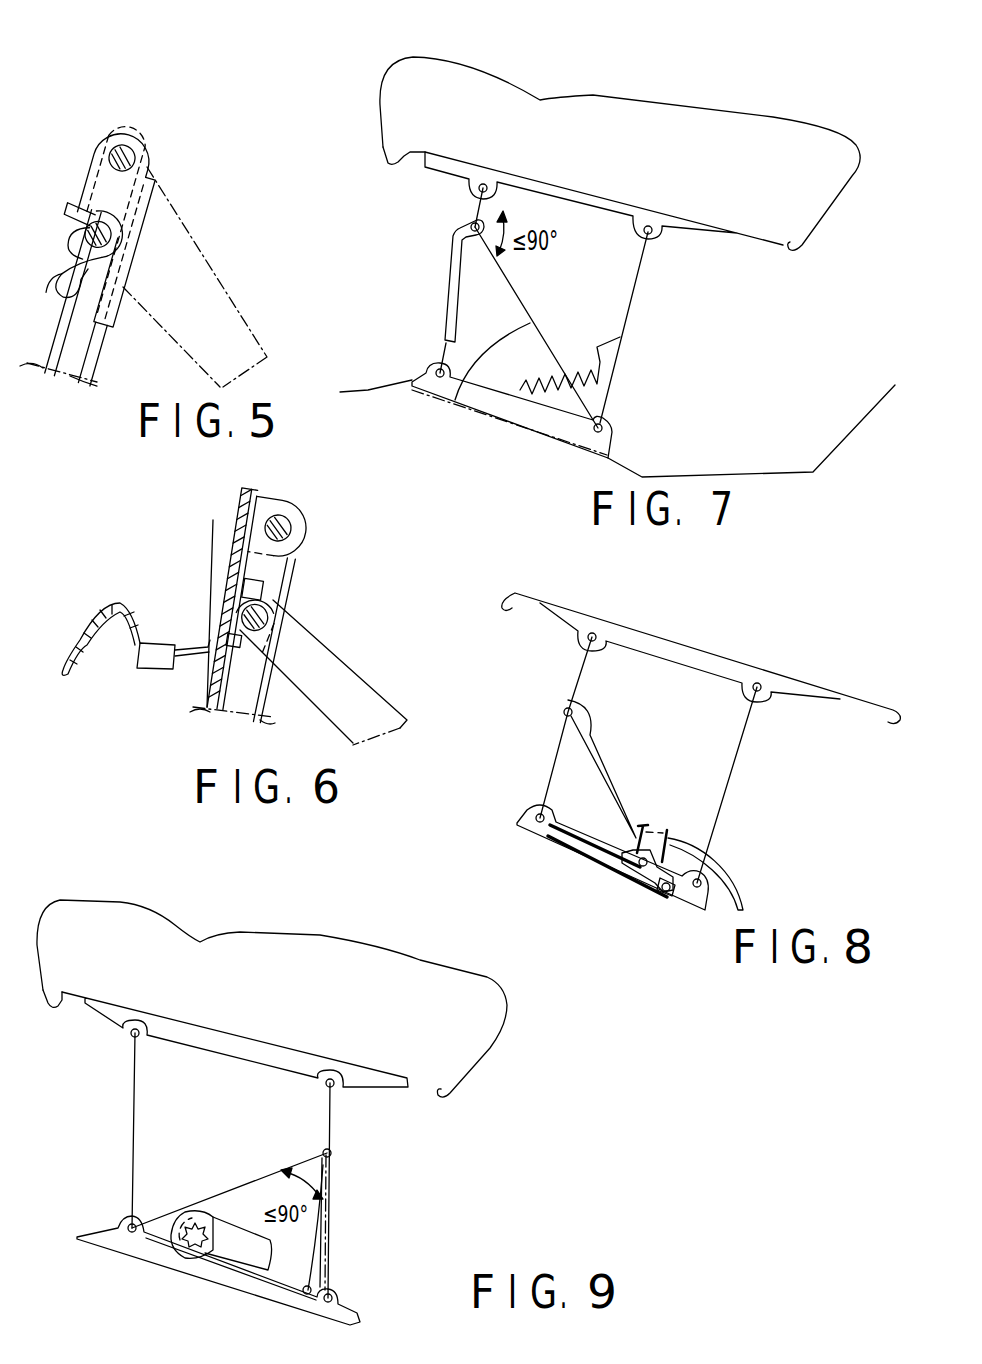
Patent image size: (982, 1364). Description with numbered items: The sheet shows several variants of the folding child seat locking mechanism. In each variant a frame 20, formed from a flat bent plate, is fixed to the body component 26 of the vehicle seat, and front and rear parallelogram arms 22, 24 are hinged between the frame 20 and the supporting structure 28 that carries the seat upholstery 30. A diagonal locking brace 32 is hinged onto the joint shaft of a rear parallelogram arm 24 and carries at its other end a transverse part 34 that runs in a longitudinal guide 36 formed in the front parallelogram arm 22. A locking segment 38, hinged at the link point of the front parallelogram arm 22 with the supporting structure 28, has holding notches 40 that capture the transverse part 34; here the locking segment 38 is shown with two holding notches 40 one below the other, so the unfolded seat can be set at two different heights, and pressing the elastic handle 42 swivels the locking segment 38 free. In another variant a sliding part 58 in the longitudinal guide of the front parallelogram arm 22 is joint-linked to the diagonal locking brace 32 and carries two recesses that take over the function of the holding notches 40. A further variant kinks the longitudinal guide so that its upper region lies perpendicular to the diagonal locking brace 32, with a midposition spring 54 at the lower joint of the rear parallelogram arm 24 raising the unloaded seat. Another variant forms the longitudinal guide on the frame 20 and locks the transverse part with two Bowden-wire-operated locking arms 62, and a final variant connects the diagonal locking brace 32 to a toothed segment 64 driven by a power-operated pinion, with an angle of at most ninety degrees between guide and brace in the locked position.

In FIG. 7, the frame 20 is at (547, 423).
In FIG. 8, the frame 20 is at (517, 823).
In FIG. 9, the frame 20 is at (350, 1310).
In FIG. 5, the front parallelogram arm 22 is at (77, 380).
In FIG. 6, the front parallelogram arm 22 is at (247, 717).
In FIG. 7, the front parallelogram arm 22 is at (442, 350).
In FIG. 8, the front parallelogram arm 22 is at (553, 763).
In FIG. 9, the front parallelogram arm 22 is at (133, 1078).
In FIG. 7, the rear parallelogram arm 24 is at (638, 277).
In FIG. 8, the rear parallelogram arm 24 is at (730, 770).
In FIG. 9, the rear parallelogram arm 24 is at (333, 1133).
In FIG. 7, the body component 26 is at (762, 467).
In FIG. 7, the supporting structure 28 is at (500, 182).
In FIG. 8, the supporting structure 28 is at (617, 630).
In FIG. 9, the supporting structure 28 is at (223, 1040).
In FIG. 7, the seat upholstery 30 is at (402, 80).
In FIG. 9, the seat upholstery 30 is at (473, 1035).
In FIG. 5, the diagonal locking brace 32 is at (197, 300).
In FIG. 6, the diagonal locking brace 32 is at (335, 683).
In FIG. 7, the diagonal locking brace 32 is at (463, 382).
In FIG. 8, the diagonal locking brace 32 is at (573, 707).
In FIG. 9, the diagonal locking brace 32 is at (217, 1190).
In FIG. 5, the transverse part 34 is at (88, 208).
In FIG. 8, the transverse part 34 is at (657, 885).
In FIG. 5, the longitudinal guide 36 is at (93, 347).
In FIG. 6, the longitudinal guide 36 is at (222, 687).
In FIG. 7, the longitudinal guide 36 is at (447, 263).
In FIG. 8, the longitudinal guide 36 is at (588, 845).
In FIG. 9, the longitudinal guide 36 is at (327, 1233).
In FIG. 5, the locking segment 38 is at (148, 160).
In FIG. 6, the locking segment 38 is at (235, 542).
In FIG. 5, the holding notch 40 is at (77, 282).
In FIG. 6, the handle 42 is at (88, 630).
In FIG. 7, the midposition spring 54 is at (600, 353).
In FIG. 6, the sliding part 58 is at (273, 592).
In FIG. 8, the locking arm 62 is at (630, 877).
In FIG. 9, the toothed segment 64 is at (168, 1228).